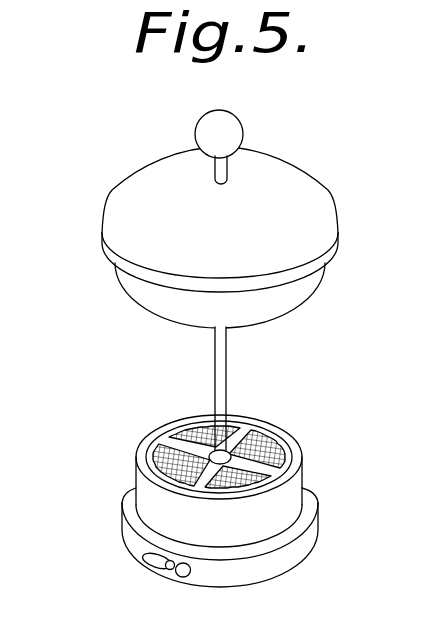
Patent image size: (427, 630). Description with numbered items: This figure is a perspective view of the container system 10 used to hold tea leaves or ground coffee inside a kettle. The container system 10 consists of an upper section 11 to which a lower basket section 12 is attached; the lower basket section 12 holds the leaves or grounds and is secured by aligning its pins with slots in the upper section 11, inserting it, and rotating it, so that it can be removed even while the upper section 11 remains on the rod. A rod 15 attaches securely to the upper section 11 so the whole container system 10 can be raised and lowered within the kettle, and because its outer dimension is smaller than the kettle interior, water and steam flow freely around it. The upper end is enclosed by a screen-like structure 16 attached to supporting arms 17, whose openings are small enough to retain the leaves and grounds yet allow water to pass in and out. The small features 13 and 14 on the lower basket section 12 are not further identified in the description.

The container system 10 is at (189, 494).
The upper section 11 is at (143, 495).
The lower basket section 12 is at (268, 578).
The tab 13 is at (143, 557).
The pin 14 is at (190, 580).
The rod 15 is at (223, 355).
The screen 16 is at (197, 430).
The supporting arms 17 is at (253, 467).